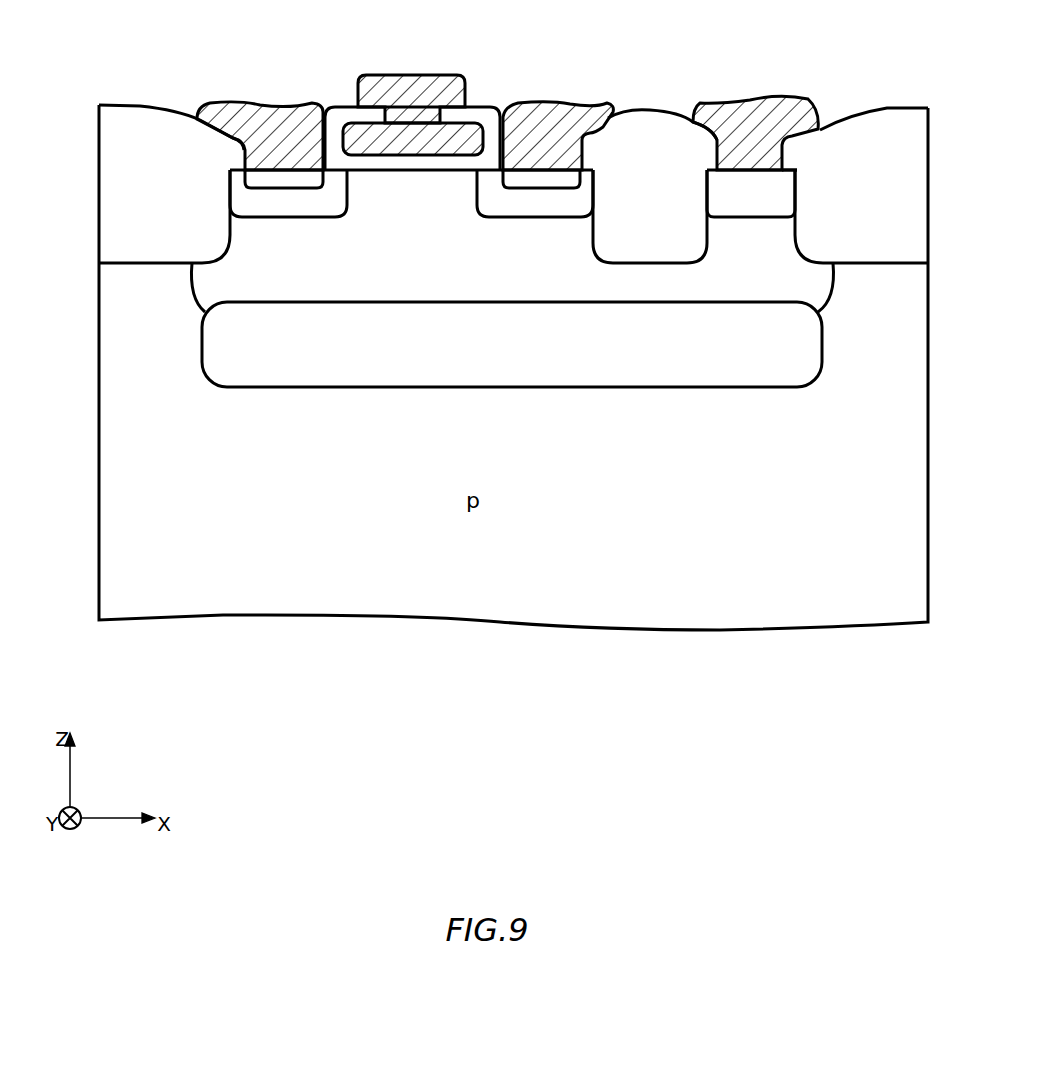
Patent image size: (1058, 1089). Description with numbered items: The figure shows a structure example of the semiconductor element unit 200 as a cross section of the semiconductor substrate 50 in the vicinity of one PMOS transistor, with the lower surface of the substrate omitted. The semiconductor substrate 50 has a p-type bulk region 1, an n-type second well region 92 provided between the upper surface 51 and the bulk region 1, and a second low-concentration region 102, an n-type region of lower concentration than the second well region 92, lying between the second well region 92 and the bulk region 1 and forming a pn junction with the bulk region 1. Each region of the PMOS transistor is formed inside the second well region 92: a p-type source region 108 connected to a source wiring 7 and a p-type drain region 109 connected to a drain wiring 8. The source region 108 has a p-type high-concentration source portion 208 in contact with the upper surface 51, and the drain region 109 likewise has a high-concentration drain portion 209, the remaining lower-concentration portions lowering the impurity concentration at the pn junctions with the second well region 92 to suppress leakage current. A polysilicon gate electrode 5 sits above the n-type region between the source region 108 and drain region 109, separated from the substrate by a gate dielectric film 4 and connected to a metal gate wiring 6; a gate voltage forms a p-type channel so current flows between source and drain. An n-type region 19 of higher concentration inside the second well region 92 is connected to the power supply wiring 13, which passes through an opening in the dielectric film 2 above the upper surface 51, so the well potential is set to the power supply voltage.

The bulk region 1 is at (192, 598).
The dielectric film 2 is at (143, 125).
The gate dielectric film 4 is at (483, 118).
The gate electrode 5 is at (427, 147).
The gate wiring 6 is at (405, 92).
The source wiring 7 is at (263, 122).
The drain wiring 8 is at (552, 115).
The power supply wiring 13 is at (750, 110).
The n-type region 19 is at (757, 208).
The semiconductor substrate 50 is at (298, 640).
The upper surface 51 is at (797, 171).
The second well region 92 is at (208, 292).
The second low-concentration region 102 is at (308, 365).
The source region 108 is at (328, 198).
The drain region 109 is at (572, 205).
The semiconductor element unit 200 is at (470, 737).
The high-concentration source portion 208 is at (262, 182).
The high-concentration drain portion 209 is at (512, 180).